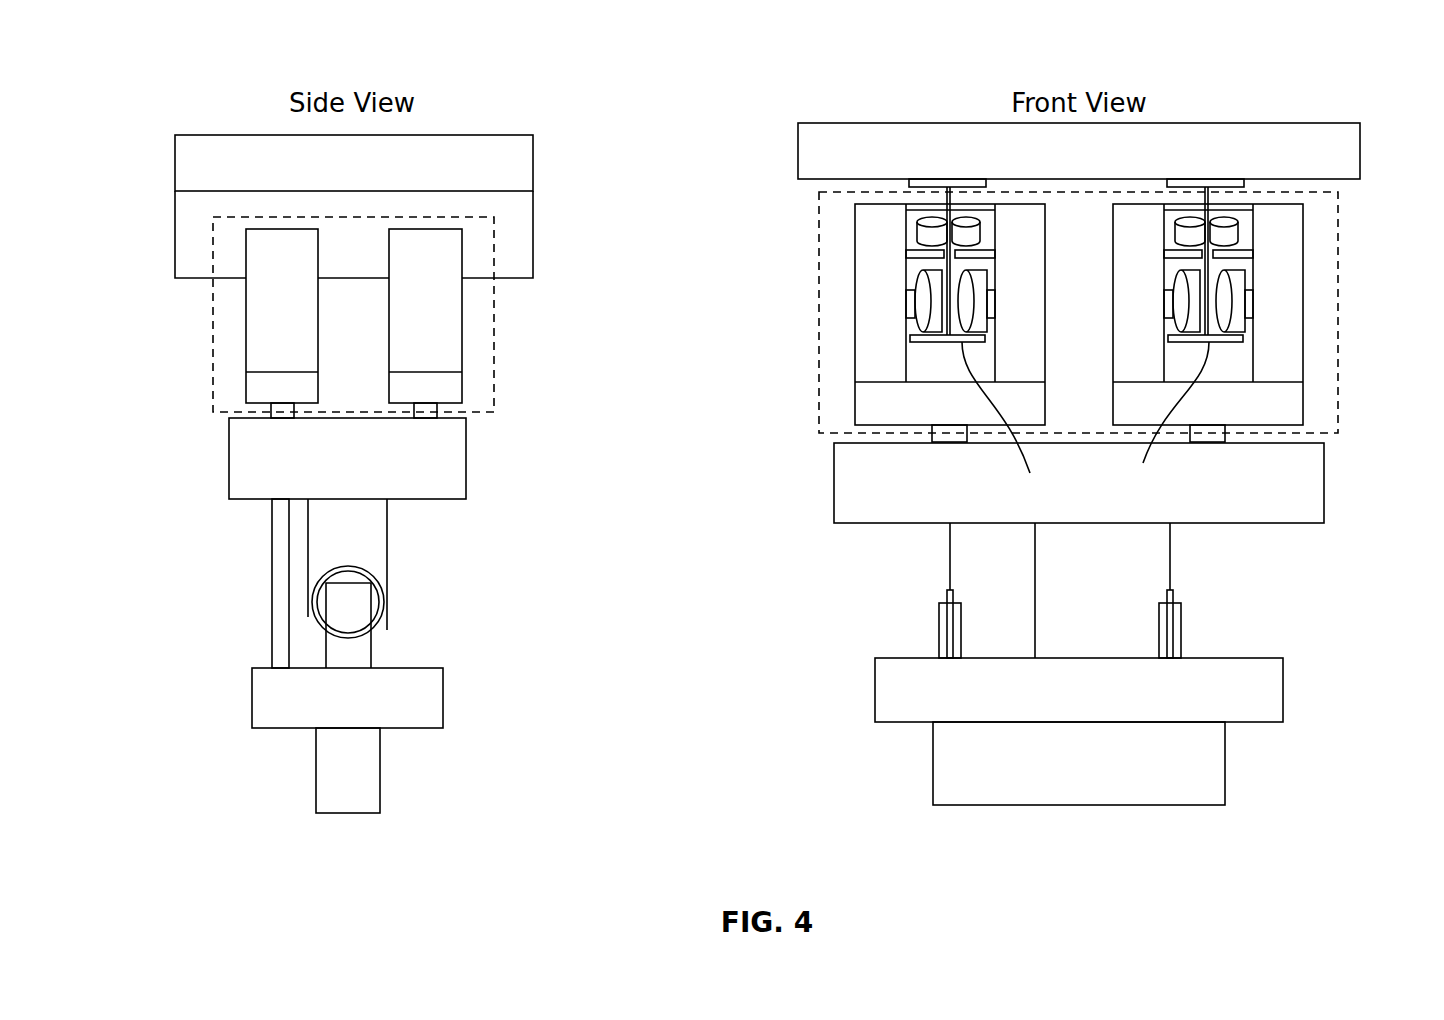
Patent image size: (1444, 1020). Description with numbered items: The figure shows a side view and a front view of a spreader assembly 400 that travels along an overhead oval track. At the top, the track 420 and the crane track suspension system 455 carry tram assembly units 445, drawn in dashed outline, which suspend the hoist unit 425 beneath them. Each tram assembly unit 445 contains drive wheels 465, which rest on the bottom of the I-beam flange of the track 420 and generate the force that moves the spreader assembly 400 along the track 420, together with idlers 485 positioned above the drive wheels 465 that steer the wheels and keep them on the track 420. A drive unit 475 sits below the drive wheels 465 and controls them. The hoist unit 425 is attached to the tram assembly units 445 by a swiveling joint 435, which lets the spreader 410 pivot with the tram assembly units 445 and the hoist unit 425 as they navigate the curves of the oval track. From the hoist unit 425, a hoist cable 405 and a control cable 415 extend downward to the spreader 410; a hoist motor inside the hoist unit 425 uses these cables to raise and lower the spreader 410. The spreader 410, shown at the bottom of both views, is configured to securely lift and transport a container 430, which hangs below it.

The spreader assembly 400 is at (185, 92).
The hoist cable 405 is at (387, 528).
The spreader 410 is at (443, 697).
The control cable 415 is at (272, 582).
The track 420 is at (1085, 423).
The hoist unit 425 is at (466, 457).
The container 430 is at (380, 775).
The swiveling joint 435 is at (278, 420).
The tram assembly unit 445 is at (213, 318).
The crane track suspension system 455 is at (533, 155).
The drive wheel 465 is at (918, 300).
The drive unit 475 is at (462, 383).
The idler 485 is at (915, 228).